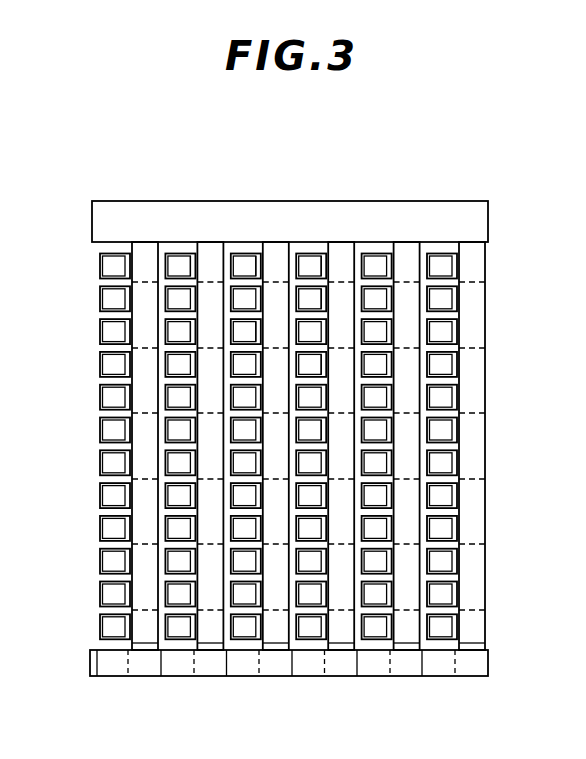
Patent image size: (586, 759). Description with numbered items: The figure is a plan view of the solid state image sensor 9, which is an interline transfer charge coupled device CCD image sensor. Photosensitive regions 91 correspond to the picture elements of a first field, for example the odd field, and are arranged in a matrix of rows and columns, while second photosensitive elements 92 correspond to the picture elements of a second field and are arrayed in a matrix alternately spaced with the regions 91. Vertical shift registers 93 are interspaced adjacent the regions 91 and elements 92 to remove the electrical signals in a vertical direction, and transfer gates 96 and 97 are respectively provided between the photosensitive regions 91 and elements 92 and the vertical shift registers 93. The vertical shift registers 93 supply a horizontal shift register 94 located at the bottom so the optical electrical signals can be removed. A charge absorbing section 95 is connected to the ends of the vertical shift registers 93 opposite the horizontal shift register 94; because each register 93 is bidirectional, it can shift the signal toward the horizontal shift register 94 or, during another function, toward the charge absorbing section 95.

The solid state image sensor 9 is at (88, 183).
The photosensitive regions 91 is at (178, 397).
The second photosensitive elements 92 is at (382, 300).
The vertical shift registers 93 is at (273, 497).
The horizontal shift register 94 is at (113, 662).
The charge absorbing section 95 is at (476, 216).
The transfer gates 96 is at (260, 330).
The transfer gates 97 is at (327, 433).